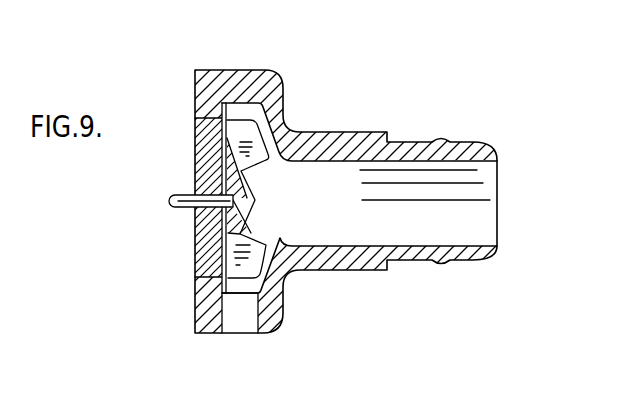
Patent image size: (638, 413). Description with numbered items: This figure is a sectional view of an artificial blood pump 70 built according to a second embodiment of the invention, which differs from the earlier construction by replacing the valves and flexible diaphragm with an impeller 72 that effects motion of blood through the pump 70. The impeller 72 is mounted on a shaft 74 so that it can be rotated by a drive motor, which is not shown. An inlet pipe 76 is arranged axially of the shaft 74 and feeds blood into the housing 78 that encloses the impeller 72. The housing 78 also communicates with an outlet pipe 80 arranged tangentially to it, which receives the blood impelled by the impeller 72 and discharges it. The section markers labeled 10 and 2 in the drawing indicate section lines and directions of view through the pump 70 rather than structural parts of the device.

The blood pump 70 is at (457, 81).
The impeller 72 is at (238, 134).
The shaft 74 is at (182, 209).
The inlet pipe 76 is at (437, 142).
The housing 78 is at (210, 323).
The outlet pipe 80 is at (250, 313).
The section line 10 is at (240, 42).
The section line 2 is at (343, 113).